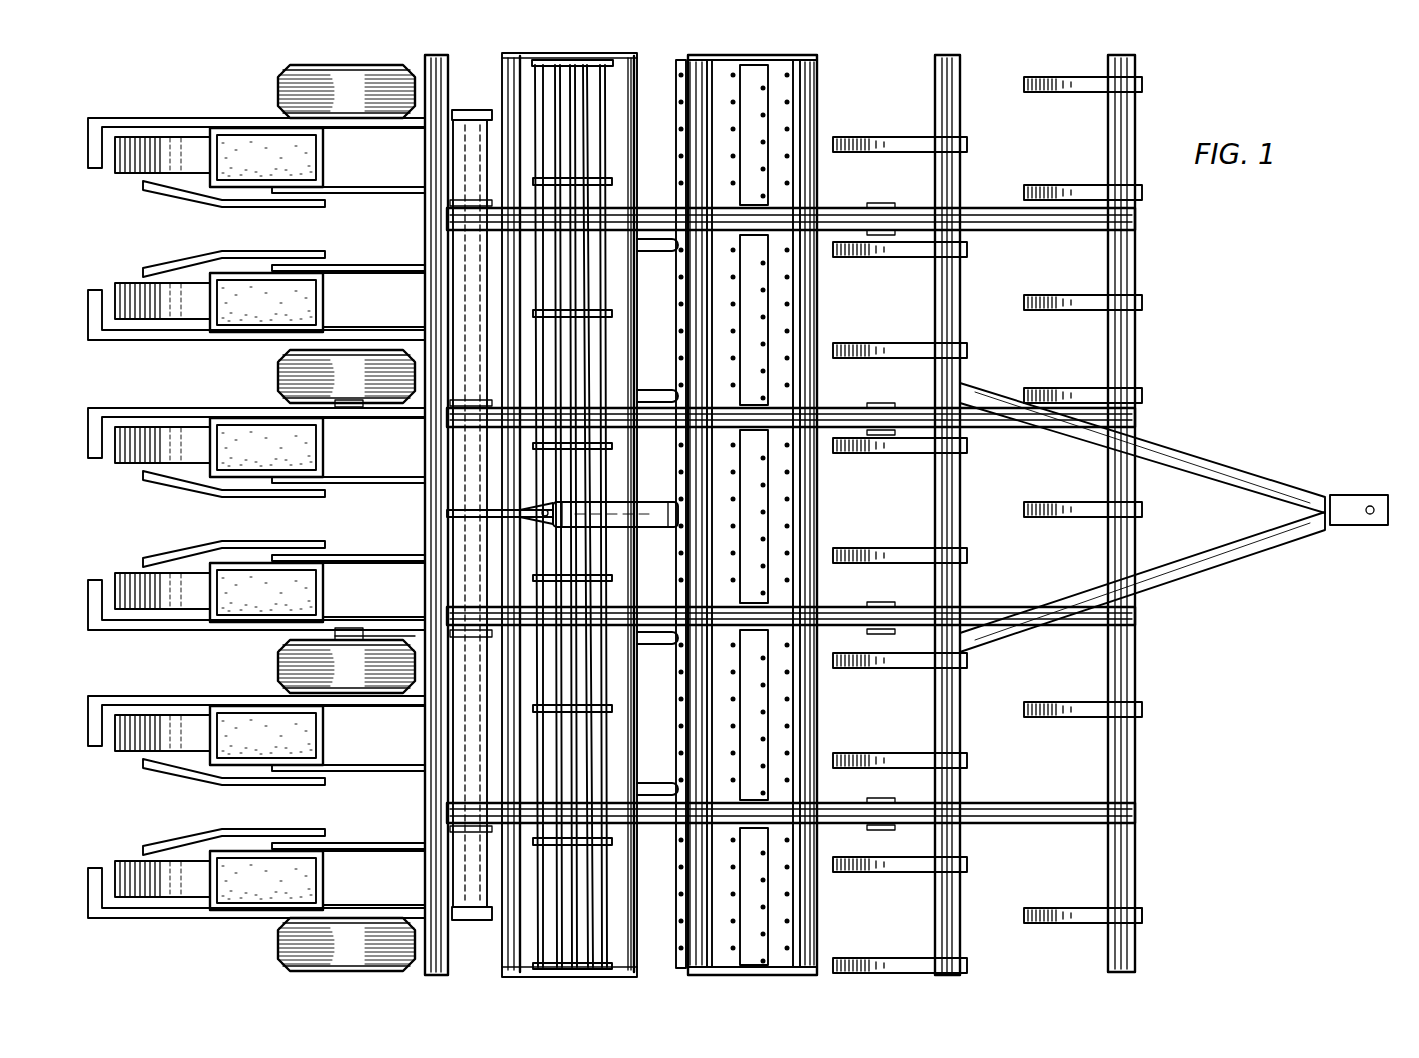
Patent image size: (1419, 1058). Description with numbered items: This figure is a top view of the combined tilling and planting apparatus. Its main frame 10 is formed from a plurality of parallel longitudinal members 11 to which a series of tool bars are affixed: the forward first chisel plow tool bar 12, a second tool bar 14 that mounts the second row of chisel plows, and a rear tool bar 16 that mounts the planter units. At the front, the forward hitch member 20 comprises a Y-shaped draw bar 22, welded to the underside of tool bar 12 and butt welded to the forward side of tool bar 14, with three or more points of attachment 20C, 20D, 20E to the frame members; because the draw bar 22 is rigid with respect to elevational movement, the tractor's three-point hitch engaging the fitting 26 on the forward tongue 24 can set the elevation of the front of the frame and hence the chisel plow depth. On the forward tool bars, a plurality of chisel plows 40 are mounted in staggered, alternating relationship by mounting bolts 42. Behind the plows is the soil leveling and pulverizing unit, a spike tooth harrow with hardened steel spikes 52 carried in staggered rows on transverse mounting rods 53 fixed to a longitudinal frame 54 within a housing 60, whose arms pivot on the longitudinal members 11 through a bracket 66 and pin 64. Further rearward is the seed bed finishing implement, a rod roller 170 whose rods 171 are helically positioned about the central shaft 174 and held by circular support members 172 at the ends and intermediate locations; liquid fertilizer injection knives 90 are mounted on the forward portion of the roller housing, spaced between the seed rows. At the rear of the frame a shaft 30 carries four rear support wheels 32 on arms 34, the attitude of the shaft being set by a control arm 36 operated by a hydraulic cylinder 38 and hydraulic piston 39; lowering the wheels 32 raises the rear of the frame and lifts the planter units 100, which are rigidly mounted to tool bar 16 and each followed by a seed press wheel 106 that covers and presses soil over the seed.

The main frame 10 is at (775, 505).
The longitudinal members 11 is at (1132, 222).
The first chisel plow tool bar 12 is at (1130, 330).
The second tool bar 14 is at (945, 70).
The rear tool bar 16 is at (437, 62).
The forward hitch member 20 is at (1184, 494).
The point of attachment 20C is at (965, 388).
The point of attachment 20D is at (1048, 432).
The point of attachment 20E is at (1100, 452).
The Y-shaped draw bar 22 is at (1196, 552).
The forward tongue 24 is at (1305, 537).
The fitting 26 is at (1372, 520).
The shaft 30 is at (468, 122).
The rear support wheels 32 is at (278, 90).
The arm 34 is at (350, 408).
The control arm 36 is at (447, 512).
The hydraulic cylinder 38 is at (656, 527).
The hydraulic piston 39 is at (522, 512).
The chisel plows 40 is at (1050, 94).
The mounting bolts 42 is at (1135, 912).
The spikes 52 is at (655, 142).
The transverse mounting rods 53 is at (790, 300).
The longitudinal frame 54 is at (795, 70).
The housing 60 is at (754, 511).
The pin 64 is at (880, 798).
The bracket 66 is at (850, 762).
The liquid fertilizer injection knives 90 is at (657, 252).
The planter units 100 is at (250, 284).
The seed press wheel 106 is at (128, 282).
The rod roller 170 is at (561, 511).
The rods 171 is at (590, 555).
The circular support members 172 is at (585, 960).
The central shaft 174 is at (575, 55).